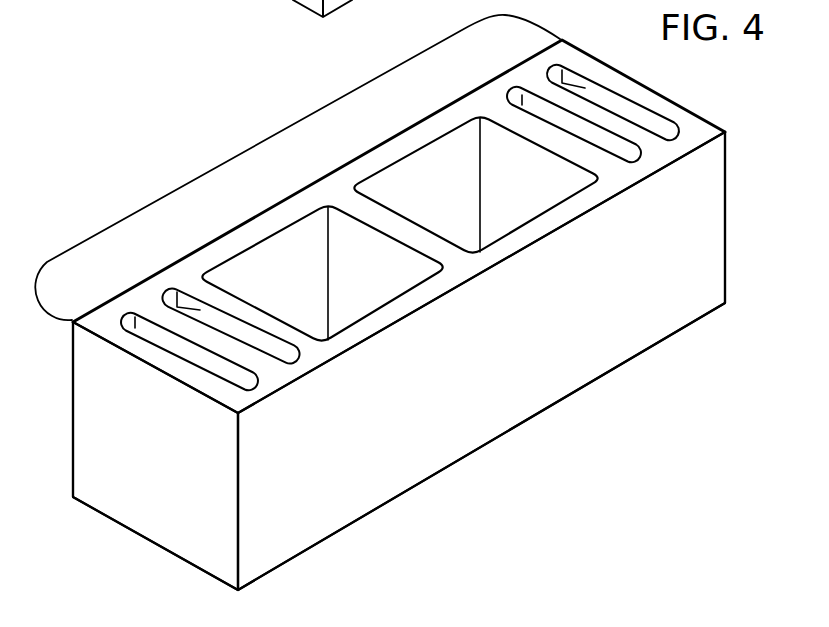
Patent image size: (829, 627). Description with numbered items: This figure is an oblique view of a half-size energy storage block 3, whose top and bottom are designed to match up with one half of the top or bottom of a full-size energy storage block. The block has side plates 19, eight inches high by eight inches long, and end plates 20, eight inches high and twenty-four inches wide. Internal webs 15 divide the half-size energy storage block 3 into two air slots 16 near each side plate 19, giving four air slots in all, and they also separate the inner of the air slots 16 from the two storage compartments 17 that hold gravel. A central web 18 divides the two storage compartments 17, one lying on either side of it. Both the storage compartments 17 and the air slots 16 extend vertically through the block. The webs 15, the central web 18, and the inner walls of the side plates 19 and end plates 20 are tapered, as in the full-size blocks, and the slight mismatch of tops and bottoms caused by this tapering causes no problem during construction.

The half-size energy storage block 3 is at (140, 211).
The internal webs 15 is at (570, 147).
The air slots 16 is at (552, 118).
The storage compartments 17 is at (399, 228).
The central web 18 is at (378, 218).
The side plates 19 is at (155, 456).
The end plates 20 is at (481, 361).